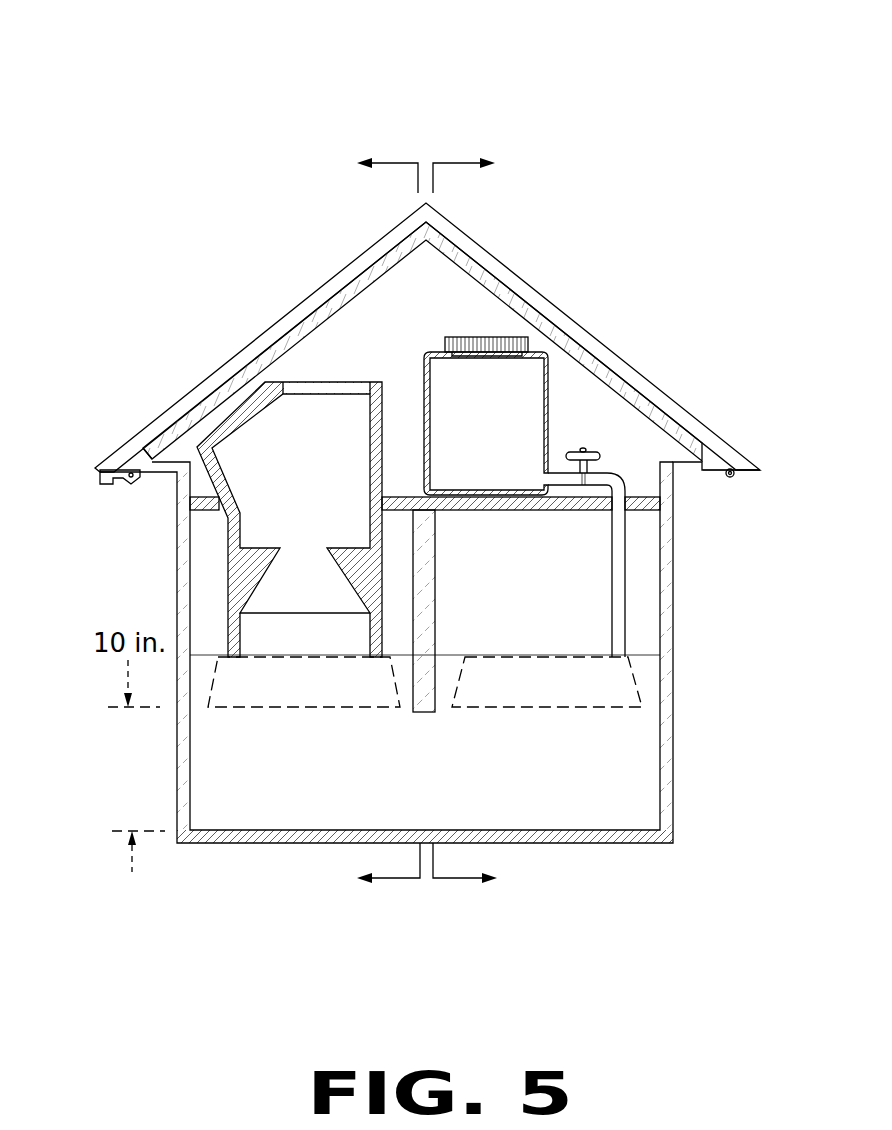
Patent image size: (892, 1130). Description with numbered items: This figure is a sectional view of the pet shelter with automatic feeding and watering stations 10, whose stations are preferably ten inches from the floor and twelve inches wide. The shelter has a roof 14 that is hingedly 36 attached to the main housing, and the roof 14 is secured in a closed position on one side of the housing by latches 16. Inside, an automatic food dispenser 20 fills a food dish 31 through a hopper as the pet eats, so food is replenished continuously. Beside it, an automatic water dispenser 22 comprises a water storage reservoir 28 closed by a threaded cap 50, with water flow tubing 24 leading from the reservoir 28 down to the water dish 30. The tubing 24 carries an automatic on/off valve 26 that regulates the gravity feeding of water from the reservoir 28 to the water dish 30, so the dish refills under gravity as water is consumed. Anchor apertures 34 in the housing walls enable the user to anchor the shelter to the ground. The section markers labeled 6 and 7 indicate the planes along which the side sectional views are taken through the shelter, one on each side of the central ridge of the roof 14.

The pet shelter with automatic feeding and watering stations 10 is at (688, 106).
The roof 14 is at (336, 276).
The latches 16 is at (120, 486).
The automatic food dispenser 20 is at (287, 418).
The automatic water dispenser 22 is at (528, 378).
The water flow tubing 24 is at (625, 588).
The automatic on/off valve 26 is at (593, 453).
The water storage reservoir 28 is at (548, 410).
The water dish 30 is at (543, 673).
The food dish 31 is at (320, 685).
The anchor apertures 34 is at (183, 800).
The hinge 36 is at (734, 475).
The threaded cap 50 is at (497, 337).
The section line 6- 6 is at (376, 524).
The section line 7- 7 is at (477, 524).